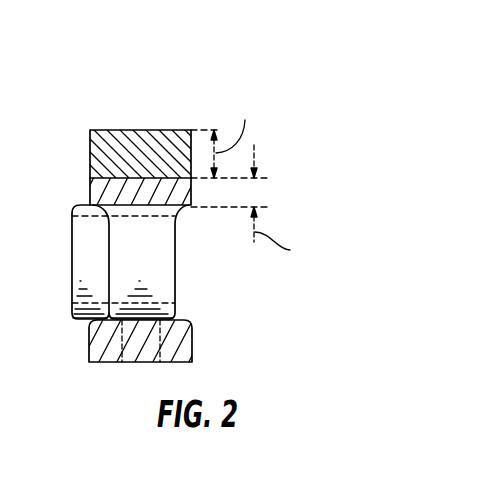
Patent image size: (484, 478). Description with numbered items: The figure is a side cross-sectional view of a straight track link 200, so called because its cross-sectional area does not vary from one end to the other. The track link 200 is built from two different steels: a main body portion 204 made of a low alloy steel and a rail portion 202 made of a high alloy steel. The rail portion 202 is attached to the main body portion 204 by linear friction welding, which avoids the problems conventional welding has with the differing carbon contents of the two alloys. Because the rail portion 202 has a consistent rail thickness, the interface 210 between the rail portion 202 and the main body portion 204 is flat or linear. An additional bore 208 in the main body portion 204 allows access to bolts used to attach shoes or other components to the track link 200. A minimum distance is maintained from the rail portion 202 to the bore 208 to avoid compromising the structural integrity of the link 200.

The straight track link 200 is at (187, 197).
The rail portion 202 is at (156, 148).
The interface 210 is at (100, 178).
The main body portion 204 is at (157, 235).
The additional bore 208 is at (140, 275).